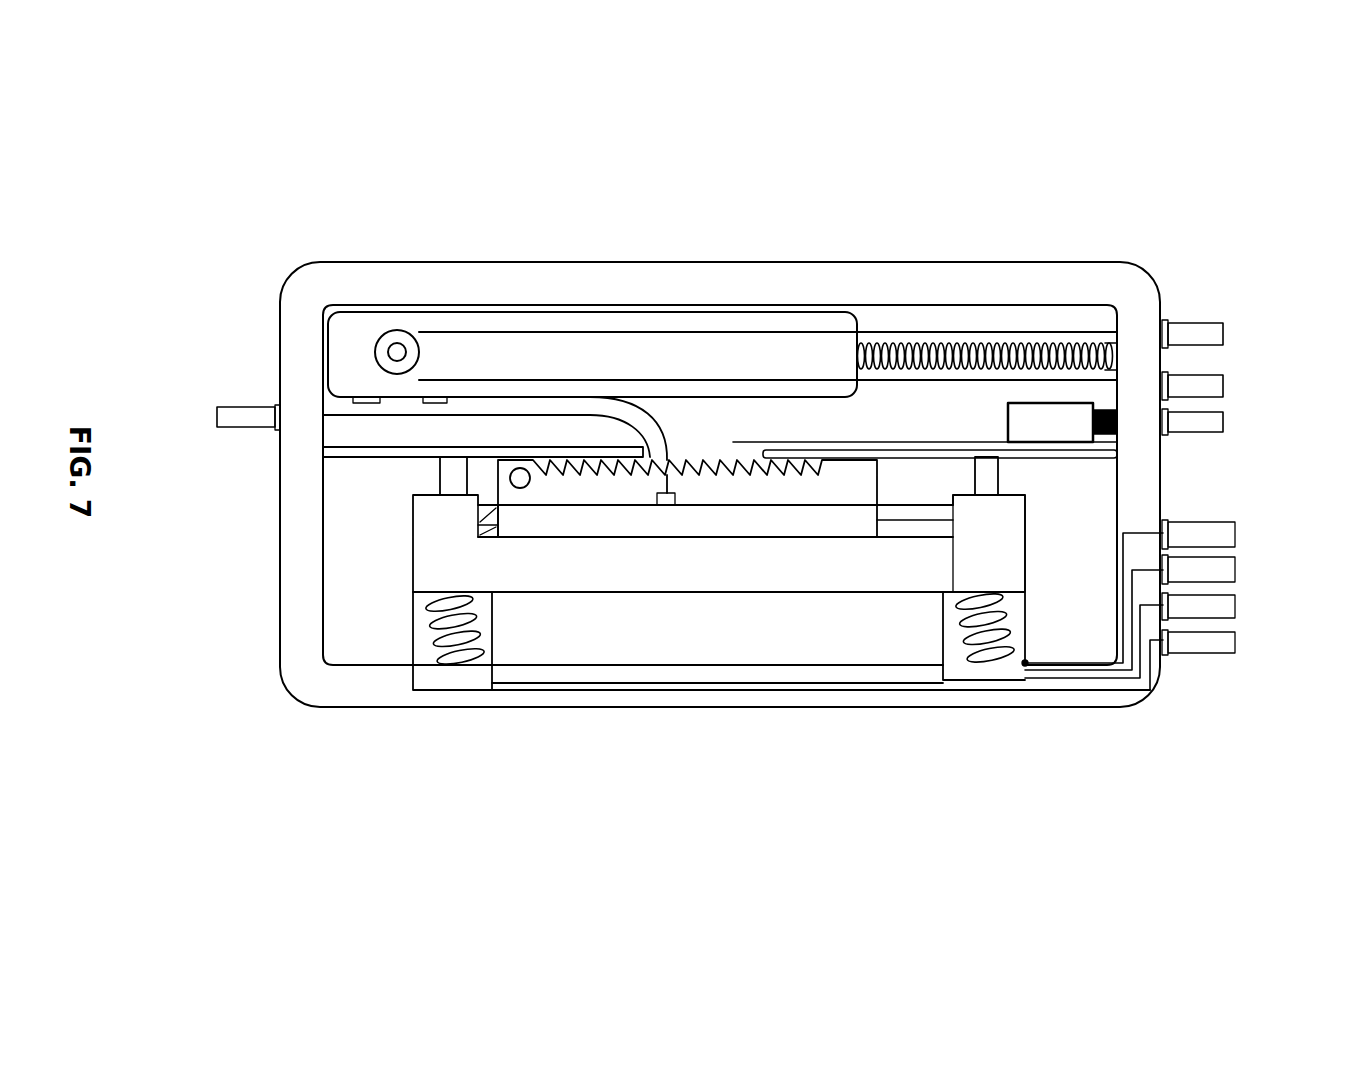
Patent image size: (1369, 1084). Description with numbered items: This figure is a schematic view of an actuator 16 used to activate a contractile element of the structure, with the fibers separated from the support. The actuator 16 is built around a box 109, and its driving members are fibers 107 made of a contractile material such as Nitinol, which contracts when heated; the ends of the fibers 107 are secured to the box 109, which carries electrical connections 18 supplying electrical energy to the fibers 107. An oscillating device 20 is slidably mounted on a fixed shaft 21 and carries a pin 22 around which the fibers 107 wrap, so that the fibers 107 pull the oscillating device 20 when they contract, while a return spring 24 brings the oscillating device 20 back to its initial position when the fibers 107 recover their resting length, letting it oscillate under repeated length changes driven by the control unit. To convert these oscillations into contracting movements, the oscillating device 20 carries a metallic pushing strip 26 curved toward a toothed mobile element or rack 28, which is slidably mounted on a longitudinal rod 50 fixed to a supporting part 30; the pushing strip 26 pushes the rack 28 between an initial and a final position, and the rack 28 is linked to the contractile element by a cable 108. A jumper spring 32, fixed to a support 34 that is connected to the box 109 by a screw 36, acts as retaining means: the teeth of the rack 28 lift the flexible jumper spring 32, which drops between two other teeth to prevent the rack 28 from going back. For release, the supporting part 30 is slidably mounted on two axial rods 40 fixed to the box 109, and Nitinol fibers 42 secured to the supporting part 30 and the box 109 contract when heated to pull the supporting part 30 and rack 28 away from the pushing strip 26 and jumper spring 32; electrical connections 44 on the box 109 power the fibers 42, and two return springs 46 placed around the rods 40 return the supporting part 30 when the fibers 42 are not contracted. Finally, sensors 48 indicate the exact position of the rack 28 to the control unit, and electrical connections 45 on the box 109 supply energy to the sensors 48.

The actuator 16 is at (616, 203).
The electrical connections 18 is at (1190, 387).
The oscillating device 20 is at (485, 318).
The fixed shaft 21 is at (997, 343).
The pin 22 is at (392, 331).
The return spring 24 is at (1097, 343).
The metallic pushing strip 26 is at (665, 413).
The toothed mobile element (rack) 28 is at (843, 477).
The supporting part 30 is at (1003, 512).
The jumper spring 32 is at (912, 450).
The support 34 is at (1055, 422).
The screw 36 is at (1190, 423).
The axial rods 40 is at (453, 472).
The Nitinol fibers 42 is at (413, 633).
The electrical connections 44 is at (1207, 533).
The electrical connections 45 is at (240, 417).
The return springs 46 is at (430, 637).
The sensors 48 is at (675, 505).
The longitudinal rod 50 is at (477, 523).
The fibers 107 is at (797, 334).
The cable 108 is at (440, 476).
The box 109 is at (722, 262).